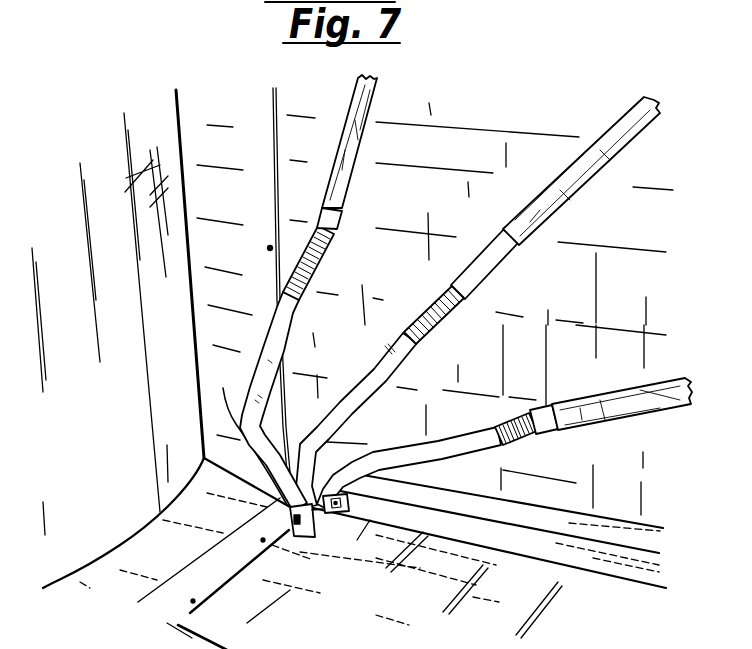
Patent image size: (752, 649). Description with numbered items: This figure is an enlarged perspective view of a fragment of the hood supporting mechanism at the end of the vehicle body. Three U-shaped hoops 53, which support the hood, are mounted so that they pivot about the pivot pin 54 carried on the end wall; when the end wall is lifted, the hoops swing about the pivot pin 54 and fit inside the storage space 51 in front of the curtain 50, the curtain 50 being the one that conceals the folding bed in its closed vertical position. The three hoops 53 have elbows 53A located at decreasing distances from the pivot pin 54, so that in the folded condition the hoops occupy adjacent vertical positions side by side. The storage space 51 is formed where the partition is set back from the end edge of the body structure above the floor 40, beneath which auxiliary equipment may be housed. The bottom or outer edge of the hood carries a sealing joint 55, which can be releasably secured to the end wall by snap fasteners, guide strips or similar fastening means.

The floor 40 is at (202, 535).
The curtain 50 is at (152, 380).
The storage space 51 is at (264, 155).
The U-shaped hoops 53 is at (347, 186).
The elbows 53A is at (224, 394).
The pivot pin 54 is at (313, 538).
The sealing joint 55 is at (583, 555).